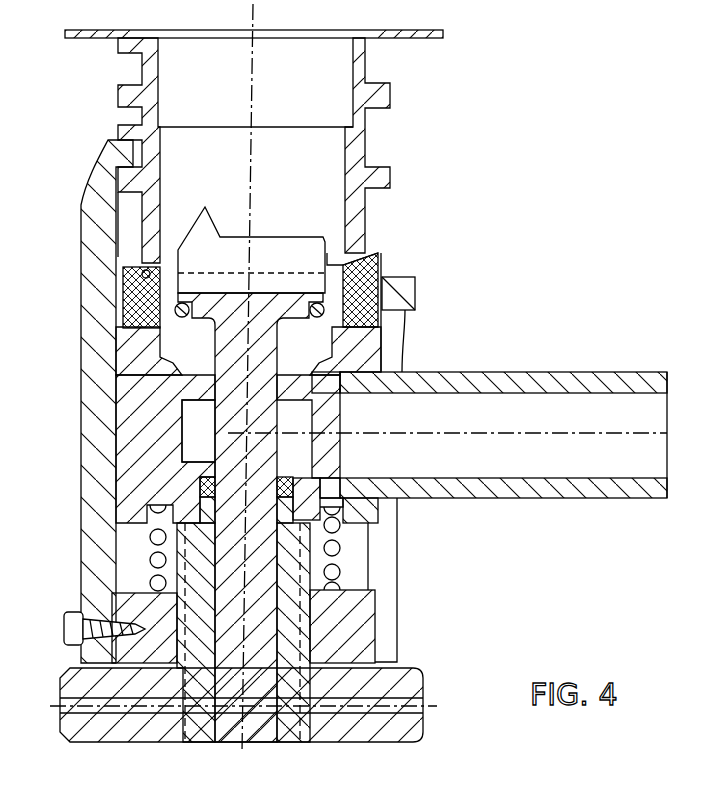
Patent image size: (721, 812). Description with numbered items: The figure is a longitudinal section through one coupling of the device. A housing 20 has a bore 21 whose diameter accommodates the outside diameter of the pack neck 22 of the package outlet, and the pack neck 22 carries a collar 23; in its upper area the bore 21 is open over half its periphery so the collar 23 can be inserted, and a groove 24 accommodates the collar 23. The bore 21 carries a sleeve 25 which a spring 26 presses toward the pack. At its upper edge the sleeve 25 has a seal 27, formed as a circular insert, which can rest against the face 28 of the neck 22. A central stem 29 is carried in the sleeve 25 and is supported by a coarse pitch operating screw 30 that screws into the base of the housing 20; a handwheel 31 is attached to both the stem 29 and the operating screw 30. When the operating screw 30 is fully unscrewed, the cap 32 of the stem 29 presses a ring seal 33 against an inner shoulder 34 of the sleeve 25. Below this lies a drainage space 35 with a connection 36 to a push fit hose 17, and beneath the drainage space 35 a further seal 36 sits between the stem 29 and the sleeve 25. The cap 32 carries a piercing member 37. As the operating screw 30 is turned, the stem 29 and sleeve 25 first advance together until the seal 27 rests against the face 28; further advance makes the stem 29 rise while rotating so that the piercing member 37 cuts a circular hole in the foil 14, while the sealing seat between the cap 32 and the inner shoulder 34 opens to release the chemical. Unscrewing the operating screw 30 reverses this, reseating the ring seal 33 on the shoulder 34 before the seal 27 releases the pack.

The foil 14 is at (333, 262).
The push fit hose 17 is at (602, 490).
The housing 20 is at (90, 190).
The bore 21 is at (128, 225).
The pack neck 22 is at (325, 240).
The collar 23 is at (358, 215).
The groove 24 is at (110, 167).
The sleeve 25 is at (133, 490).
The spring 26 is at (336, 572).
The seal 27 is at (138, 300).
The face 28 is at (127, 278).
The central stem 29 is at (222, 410).
The operating screw 30 is at (287, 625).
The handwheel 31 is at (398, 728).
The cap 32 is at (352, 292).
The ring seal 33 is at (324, 312).
The inner shoulder 34 is at (173, 362).
The drainage space 35 is at (197, 440).
The connection 36 is at (197, 500).
The piercing member 37 is at (307, 248).